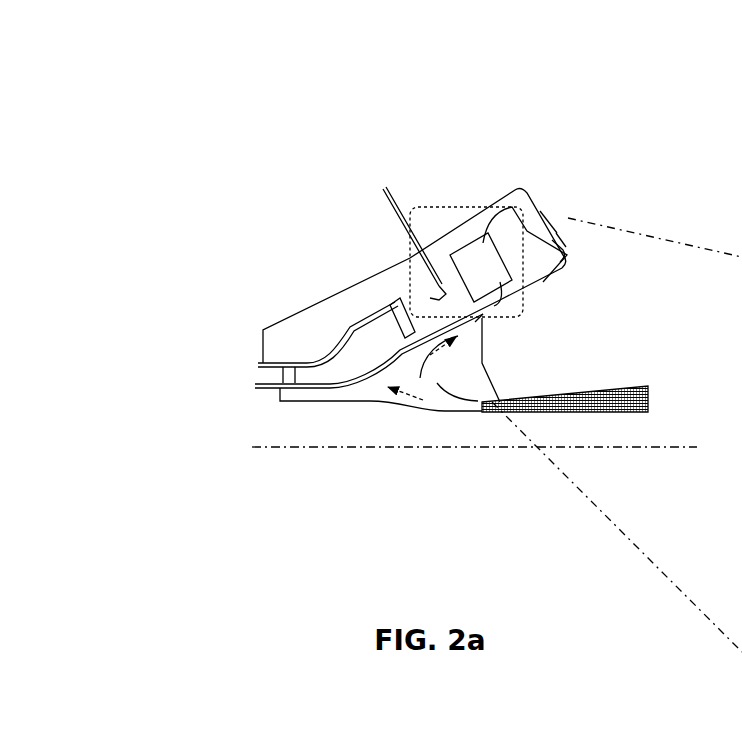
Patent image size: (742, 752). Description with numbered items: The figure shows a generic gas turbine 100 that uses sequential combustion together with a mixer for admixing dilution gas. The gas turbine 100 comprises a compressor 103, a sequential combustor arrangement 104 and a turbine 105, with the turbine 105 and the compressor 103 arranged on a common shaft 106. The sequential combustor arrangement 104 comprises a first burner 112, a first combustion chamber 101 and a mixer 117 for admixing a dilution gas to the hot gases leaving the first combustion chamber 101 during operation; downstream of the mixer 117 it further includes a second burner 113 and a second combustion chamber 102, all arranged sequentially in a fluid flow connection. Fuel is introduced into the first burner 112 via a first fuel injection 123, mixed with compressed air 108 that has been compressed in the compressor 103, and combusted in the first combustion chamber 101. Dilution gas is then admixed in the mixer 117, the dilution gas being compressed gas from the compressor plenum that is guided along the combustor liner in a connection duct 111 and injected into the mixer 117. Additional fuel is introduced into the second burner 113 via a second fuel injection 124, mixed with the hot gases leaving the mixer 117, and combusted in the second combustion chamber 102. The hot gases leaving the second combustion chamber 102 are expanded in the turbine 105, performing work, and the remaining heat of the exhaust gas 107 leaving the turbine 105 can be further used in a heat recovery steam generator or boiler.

The gas turbine 100 is at (356, 172).
The first combustion chamber 101 is at (493, 260).
The second combustion chamber 102 is at (364, 335).
The compressor 103 is at (602, 414).
The sequential combustor arrangement 104 is at (562, 236).
The turbine 105 is at (284, 416).
The shaft 106 is at (437, 461).
The exhaust gas 107 is at (198, 377).
The compressed air 108 is at (458, 408).
The connection duct 111 is at (740, 694).
The first burner 112 is at (556, 252).
The second burner 113 is at (476, 316).
The mixer 117 is at (505, 287).
The first fuel injection 123 is at (557, 212).
The second fuel injection 124 is at (393, 190).